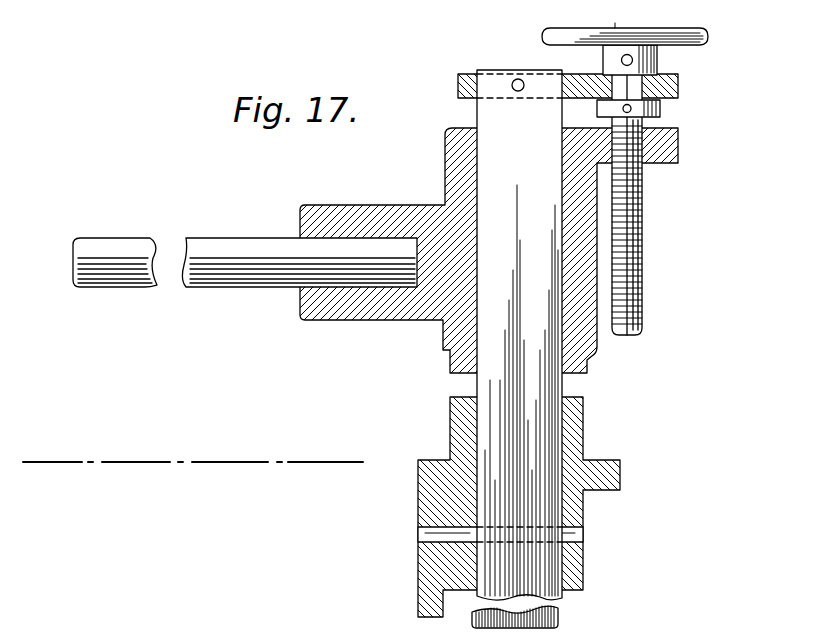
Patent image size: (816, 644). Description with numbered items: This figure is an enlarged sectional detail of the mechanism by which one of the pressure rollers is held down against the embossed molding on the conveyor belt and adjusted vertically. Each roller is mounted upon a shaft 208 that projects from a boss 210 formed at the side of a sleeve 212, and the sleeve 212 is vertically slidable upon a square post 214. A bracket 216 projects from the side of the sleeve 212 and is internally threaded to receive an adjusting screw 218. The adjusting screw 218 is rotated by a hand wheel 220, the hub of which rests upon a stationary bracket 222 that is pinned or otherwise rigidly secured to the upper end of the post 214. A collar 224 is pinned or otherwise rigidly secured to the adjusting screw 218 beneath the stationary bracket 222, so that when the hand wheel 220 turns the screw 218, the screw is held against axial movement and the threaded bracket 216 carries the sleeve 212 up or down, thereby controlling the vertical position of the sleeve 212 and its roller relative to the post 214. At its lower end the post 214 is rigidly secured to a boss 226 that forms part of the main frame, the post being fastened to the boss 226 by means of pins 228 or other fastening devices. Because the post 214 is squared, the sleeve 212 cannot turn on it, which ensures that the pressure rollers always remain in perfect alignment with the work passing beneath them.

The shaft 208 is at (217, 281).
The boss 210 is at (370, 310).
The sleeve 212 is at (582, 338).
The square post 214 is at (490, 345).
The bracket 216 is at (680, 155).
The adjusting screw 218 is at (640, 267).
The hand wheel 220 is at (697, 45).
The stationary bracket 222 is at (677, 90).
The collar 224 is at (660, 110).
The boss 226 is at (430, 482).
The pins 228 is at (420, 532).